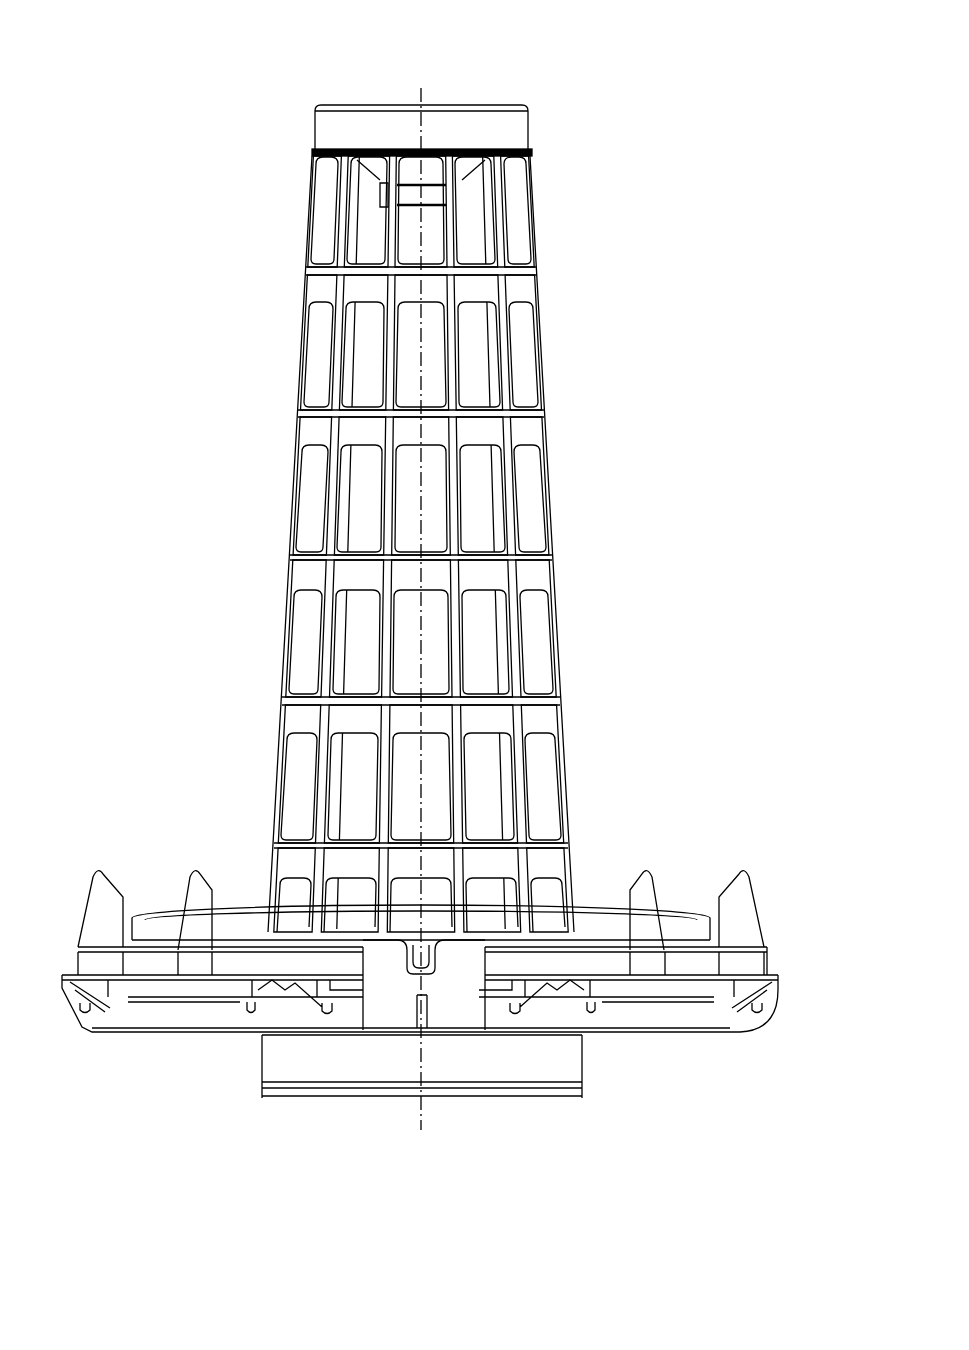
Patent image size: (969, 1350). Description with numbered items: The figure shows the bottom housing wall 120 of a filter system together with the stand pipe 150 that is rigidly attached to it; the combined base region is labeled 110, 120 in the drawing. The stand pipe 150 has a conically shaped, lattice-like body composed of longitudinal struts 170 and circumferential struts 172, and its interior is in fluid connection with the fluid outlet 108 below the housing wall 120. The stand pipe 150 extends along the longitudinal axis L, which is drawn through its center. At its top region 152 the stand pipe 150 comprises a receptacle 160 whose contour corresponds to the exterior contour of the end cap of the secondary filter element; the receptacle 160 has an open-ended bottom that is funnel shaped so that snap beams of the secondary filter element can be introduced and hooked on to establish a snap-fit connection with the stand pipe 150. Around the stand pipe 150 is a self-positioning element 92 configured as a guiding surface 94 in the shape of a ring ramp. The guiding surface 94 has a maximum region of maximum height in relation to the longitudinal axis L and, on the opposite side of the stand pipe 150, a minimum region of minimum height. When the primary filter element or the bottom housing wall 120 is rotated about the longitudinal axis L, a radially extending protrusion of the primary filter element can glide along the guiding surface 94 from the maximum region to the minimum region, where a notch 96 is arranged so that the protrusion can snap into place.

The stand pipe 150 is at (290, 127).
The top region 152 is at (472, 103).
The receptacle 160 is at (392, 103).
The longitudinal axis L is at (421, 90).
The circumferential struts 172 is at (310, 432).
The longitudinal struts 170 is at (322, 495).
The self-positioning element 92 is at (250, 895).
The guiding surface 94 is at (598, 900).
The base plate 110 is at (123, 1030).
The bottom housing wall 120 is at (420, 989).
The notch 96 is at (405, 968).
The fluid outlet 108 is at (277, 1097).